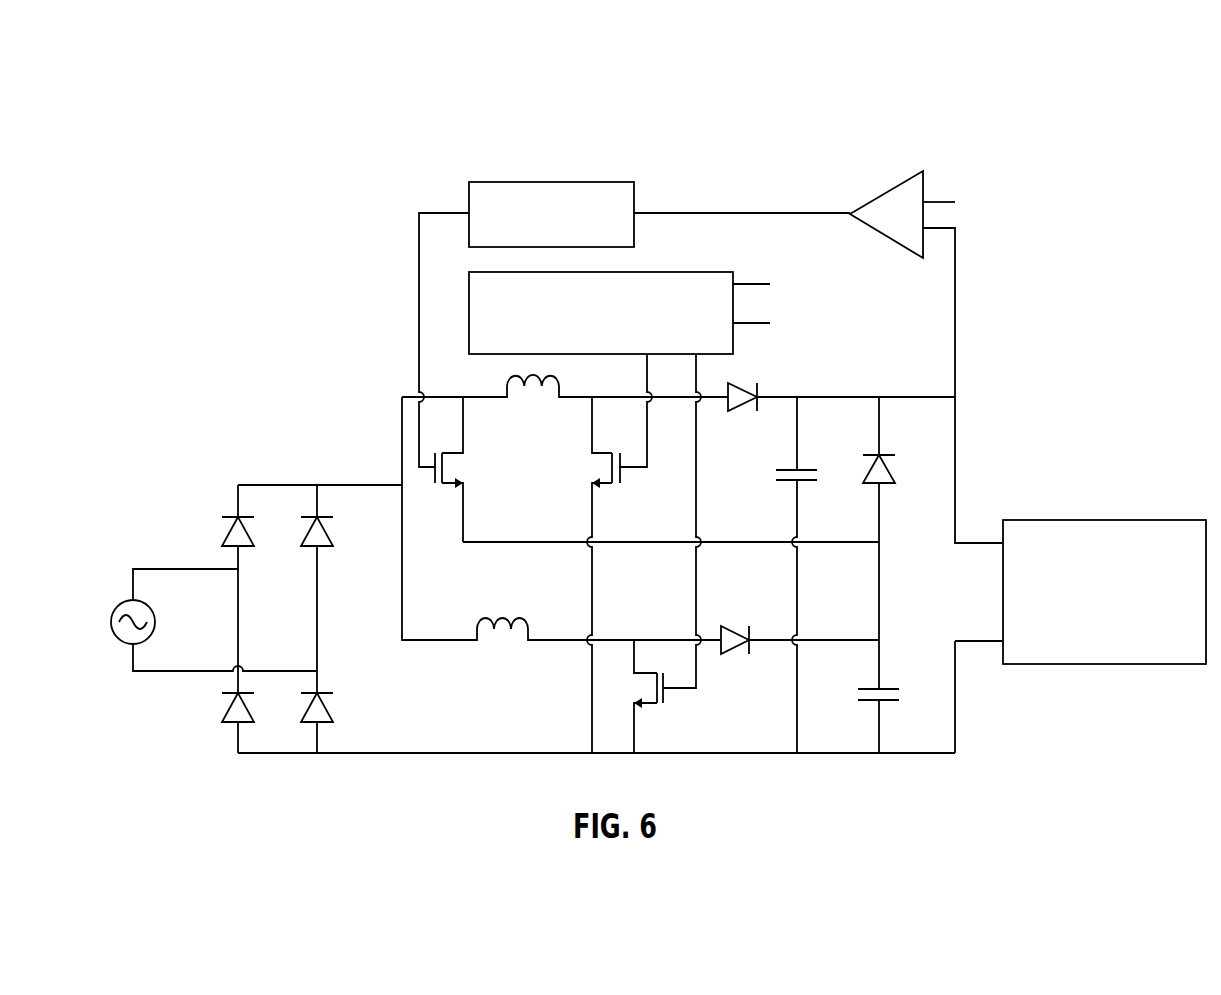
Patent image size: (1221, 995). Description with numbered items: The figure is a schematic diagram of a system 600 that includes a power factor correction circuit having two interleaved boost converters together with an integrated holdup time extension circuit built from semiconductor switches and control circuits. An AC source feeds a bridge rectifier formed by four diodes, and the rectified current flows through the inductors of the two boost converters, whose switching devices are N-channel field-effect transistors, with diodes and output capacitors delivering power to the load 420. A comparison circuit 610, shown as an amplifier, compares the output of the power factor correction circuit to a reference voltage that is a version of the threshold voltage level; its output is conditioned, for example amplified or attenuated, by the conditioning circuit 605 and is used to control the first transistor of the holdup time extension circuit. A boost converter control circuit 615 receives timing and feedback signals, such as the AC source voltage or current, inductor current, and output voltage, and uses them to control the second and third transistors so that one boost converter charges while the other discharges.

The system 600 is at (1086, 91).
The conditioning circuit 605 is at (568, 236).
The comparison circuit 610 is at (892, 189).
The boost converter control circuit 615 is at (673, 336).
The load 420 is at (1165, 603).